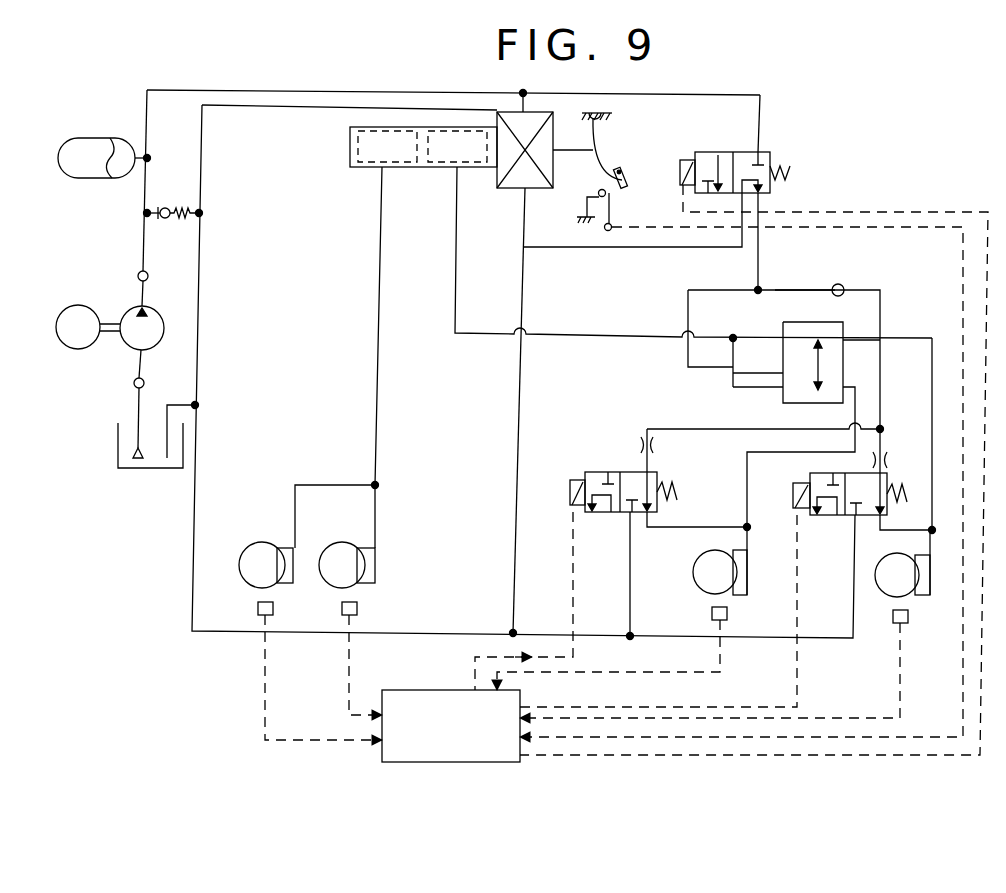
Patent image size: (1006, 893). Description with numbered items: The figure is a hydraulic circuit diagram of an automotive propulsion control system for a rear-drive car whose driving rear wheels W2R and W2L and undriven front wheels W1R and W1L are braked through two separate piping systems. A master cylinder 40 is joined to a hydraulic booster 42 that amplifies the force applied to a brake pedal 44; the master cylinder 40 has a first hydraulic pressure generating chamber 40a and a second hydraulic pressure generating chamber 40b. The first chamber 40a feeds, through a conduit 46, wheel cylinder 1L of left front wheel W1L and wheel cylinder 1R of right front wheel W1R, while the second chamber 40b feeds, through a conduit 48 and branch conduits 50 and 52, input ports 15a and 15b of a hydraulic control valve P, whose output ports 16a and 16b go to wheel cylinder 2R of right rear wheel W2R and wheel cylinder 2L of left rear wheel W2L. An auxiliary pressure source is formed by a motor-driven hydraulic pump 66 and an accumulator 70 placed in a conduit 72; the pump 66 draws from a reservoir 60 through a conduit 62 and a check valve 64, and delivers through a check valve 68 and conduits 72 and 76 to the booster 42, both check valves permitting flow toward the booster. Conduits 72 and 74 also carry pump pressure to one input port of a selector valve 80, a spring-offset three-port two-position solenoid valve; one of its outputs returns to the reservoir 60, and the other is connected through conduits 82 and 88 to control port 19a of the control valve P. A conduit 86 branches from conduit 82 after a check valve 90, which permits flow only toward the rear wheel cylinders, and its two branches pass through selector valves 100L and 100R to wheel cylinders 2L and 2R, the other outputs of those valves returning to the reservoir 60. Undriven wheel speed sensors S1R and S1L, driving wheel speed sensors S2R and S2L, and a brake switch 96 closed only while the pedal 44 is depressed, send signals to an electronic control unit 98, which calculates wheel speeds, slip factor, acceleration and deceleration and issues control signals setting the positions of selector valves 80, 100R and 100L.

The conduit 72 is at (172, 90).
The conduit 74 is at (664, 95).
The conduit 76 is at (530, 98).
The accumulator 70 is at (102, 138).
The check valve 68 is at (137, 275).
The motor-driven hydraulic pump 66 is at (126, 310).
The check valve 64 is at (133, 384).
The conduit 62 is at (167, 405).
The reservoir 60 is at (118, 448).
The master cylinder 40 is at (391, 187).
The first hydraulic pressure generating chamber 40a is at (358, 158).
The second hydraulic pressure generating chamber 40b is at (467, 167).
The conduit 46 is at (380, 234).
The conduit 48 is at (456, 234).
The hydraulic booster 42 is at (528, 188).
The brake pedal 44 is at (622, 179).
The brake switch 96 is at (612, 212).
The selector valve 80 is at (706, 152).
The conduit 82 is at (760, 270).
The conduit 86 is at (806, 290).
The check valve 90 is at (840, 284).
The conduit 88 is at (761, 385).
The branch conduit 52 is at (736, 336).
The branch conduit 50 is at (733, 386).
The control port 19a is at (783, 376).
The input port 15a is at (786, 338).
The input port 15b is at (783, 394).
The output port 16a is at (846, 336).
The output port 16b is at (845, 386).
The hydraulic control valve P is at (810, 322).
The selector valve 100L is at (610, 472).
The selector valve 100R is at (892, 474).
The left front wheel W1L is at (258, 548).
The right front wheel W1R is at (342, 548).
The left rear wheel W2L is at (696, 574).
The right rear wheel W2R is at (878, 574).
The wheel cylinder 1L is at (287, 583).
The wheel cylinder 1R is at (362, 583).
The wheel cylinder 2L is at (738, 595).
The wheel cylinder 2R is at (920, 595).
The undriven wheel speed sensor S1L is at (258, 608).
The undriven wheel speed sensor S1R is at (357, 608).
The driving wheel speed sensor S2L is at (712, 614).
The driving wheel speed sensor S2R is at (895, 625).
The electronic control unit 98 is at (410, 690).